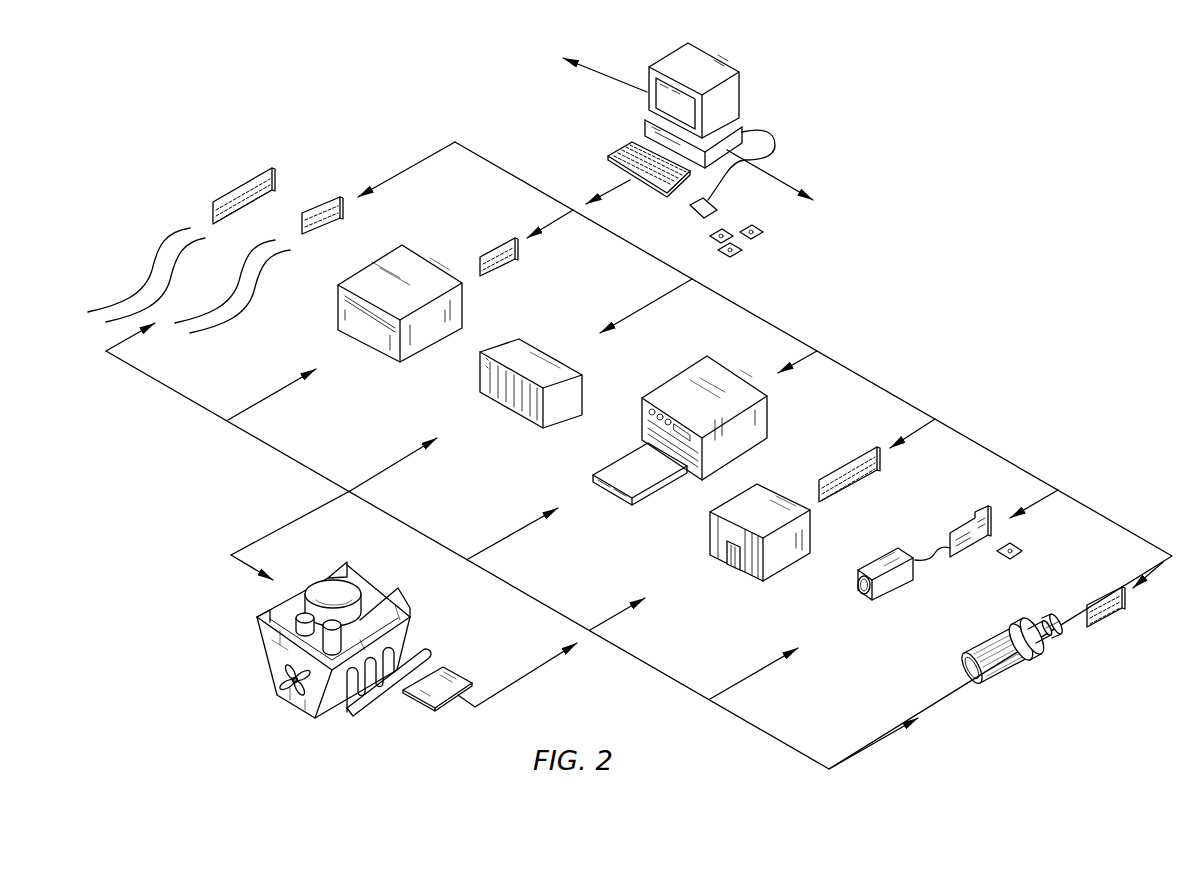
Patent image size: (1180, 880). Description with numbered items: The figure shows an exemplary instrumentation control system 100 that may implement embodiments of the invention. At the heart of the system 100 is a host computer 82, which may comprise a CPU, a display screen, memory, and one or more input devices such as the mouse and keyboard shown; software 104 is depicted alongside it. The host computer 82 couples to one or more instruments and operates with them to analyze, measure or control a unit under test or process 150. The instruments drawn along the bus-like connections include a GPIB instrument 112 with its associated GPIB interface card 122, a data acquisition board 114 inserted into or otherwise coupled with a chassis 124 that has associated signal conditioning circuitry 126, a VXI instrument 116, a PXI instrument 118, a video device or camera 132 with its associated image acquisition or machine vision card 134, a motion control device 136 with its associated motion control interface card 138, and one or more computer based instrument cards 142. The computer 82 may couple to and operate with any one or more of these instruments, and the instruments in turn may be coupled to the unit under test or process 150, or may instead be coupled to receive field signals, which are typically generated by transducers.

The host computer 82 is at (710, 62).
The instrumentation control system 100 is at (990, 150).
The software 104 is at (740, 257).
The GPIB instrument 112 is at (362, 277).
The data acquisition board 114 is at (838, 497).
The VXI instrument 116 is at (678, 387).
The PXI instrument 118 is at (512, 415).
The GPIB interface card 122 is at (488, 248).
The chassis 124 is at (708, 542).
The signal conditioning circuitry 126 is at (733, 567).
The video device or camera 132 is at (897, 595).
The image acquisition card 134 is at (962, 523).
The motion control device 136 is at (1007, 677).
The motion control interface card 138 is at (1108, 620).
The computer based instrument cards 142 is at (227, 191).
The unit under test or process 150 is at (268, 662).